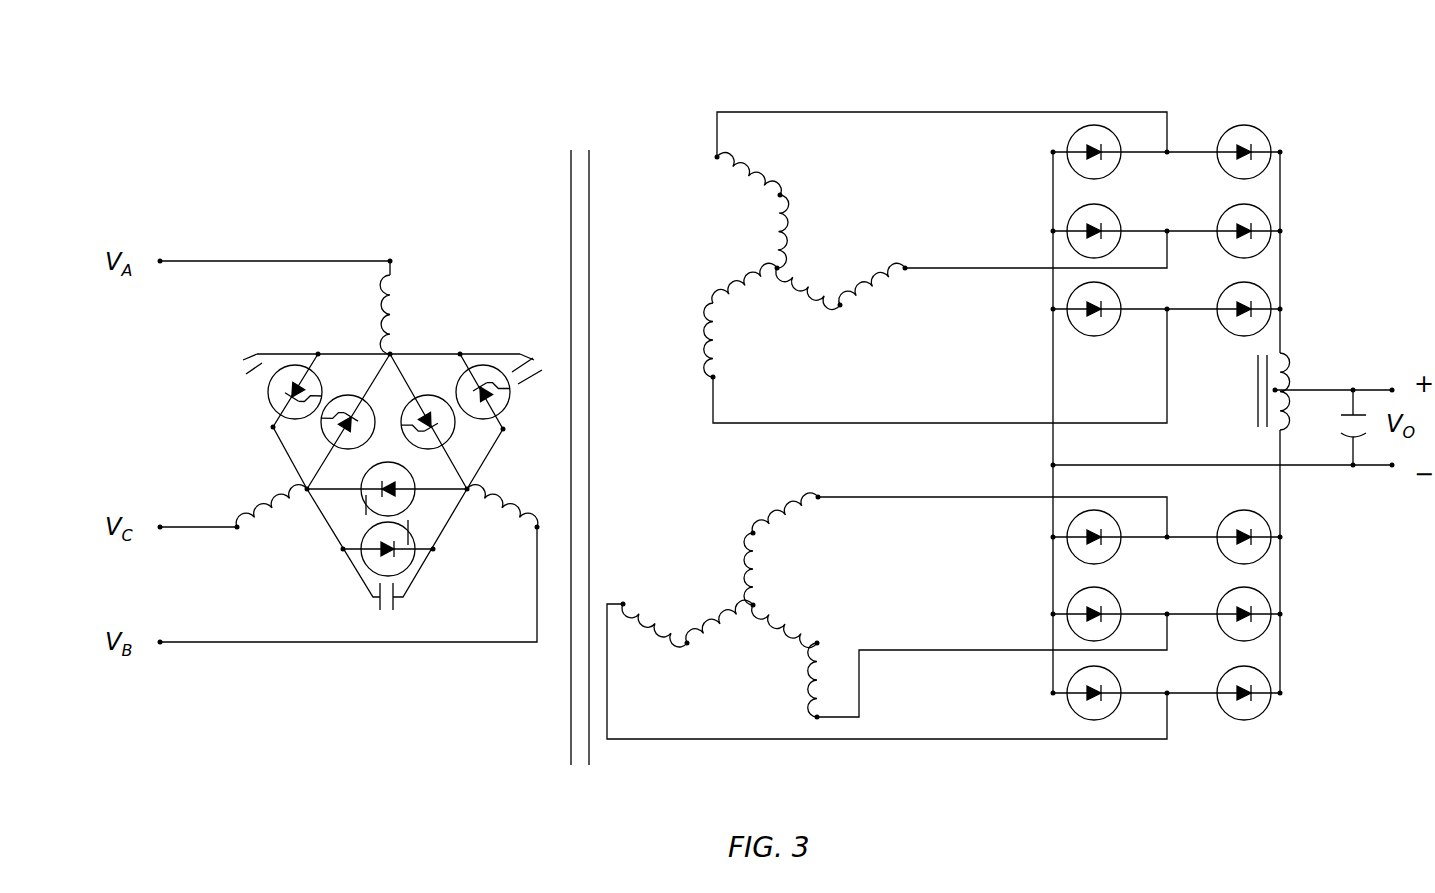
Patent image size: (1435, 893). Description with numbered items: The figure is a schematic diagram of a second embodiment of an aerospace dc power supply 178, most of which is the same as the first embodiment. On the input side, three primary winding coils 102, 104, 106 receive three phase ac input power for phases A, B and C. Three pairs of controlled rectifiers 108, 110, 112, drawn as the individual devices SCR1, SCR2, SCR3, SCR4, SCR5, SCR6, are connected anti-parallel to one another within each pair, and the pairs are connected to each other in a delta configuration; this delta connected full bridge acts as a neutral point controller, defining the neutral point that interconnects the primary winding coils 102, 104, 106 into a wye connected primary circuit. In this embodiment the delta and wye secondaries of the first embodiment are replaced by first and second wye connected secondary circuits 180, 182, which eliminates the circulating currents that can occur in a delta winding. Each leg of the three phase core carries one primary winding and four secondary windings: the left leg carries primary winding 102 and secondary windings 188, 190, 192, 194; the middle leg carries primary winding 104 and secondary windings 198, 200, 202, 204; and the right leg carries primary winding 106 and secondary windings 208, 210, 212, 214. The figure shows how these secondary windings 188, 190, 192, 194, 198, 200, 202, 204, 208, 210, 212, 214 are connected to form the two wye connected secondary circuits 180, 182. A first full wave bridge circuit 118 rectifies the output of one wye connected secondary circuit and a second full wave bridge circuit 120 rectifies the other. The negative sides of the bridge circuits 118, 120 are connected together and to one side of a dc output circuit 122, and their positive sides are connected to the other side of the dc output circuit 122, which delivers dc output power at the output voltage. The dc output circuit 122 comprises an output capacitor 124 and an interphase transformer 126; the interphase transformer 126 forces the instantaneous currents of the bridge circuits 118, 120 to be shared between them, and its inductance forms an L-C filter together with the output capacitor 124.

The primary winding coil 102 is at (397, 297).
The primary winding coil 104 is at (495, 505).
The primary winding coil 106 is at (298, 490).
The pair of controlled rectifiers 108 is at (297, 330).
The pair of controlled rectifiers 110 is at (332, 563).
The pair of controlled rectifiers 112 is at (440, 327).
The first full wave bridge circuit 118 is at (1233, 115).
The second full wave bridge circuit 120 is at (1188, 723).
The dc output circuit 122 is at (1340, 365).
The output capacitor 124 is at (1342, 437).
The interphase transformer 126 is at (1257, 392).
The aerospace dc power supply 178 is at (385, 760).
The first wye connected secondary circuit 180 is at (797, 160).
The second wye connected secondary circuit 182 is at (705, 710).
The secondary winding 188 is at (788, 224).
The secondary winding 190 is at (720, 335).
The secondary winding 192 is at (760, 565).
The secondary winding 194 is at (827, 660).
The secondary winding 198 is at (810, 300).
The secondary winding 200 is at (755, 187).
The secondary winding 202 is at (772, 622).
The secondary winding 204 is at (655, 628).
The secondary winding 208 is at (747, 275).
The secondary winding 210 is at (875, 275).
The secondary winding 212 is at (737, 610).
The secondary winding 214 is at (787, 503).
The silicon controlled rectifier SCR1 is at (338, 438).
The silicon controlled rectifier SCR2 is at (268, 408).
The silicon controlled rectifier SCR3 is at (366, 495).
The silicon controlled rectifier SCR4 is at (410, 563).
The silicon controlled rectifier SCR5 is at (430, 393).
The silicon controlled rectifier SCR6 is at (508, 405).